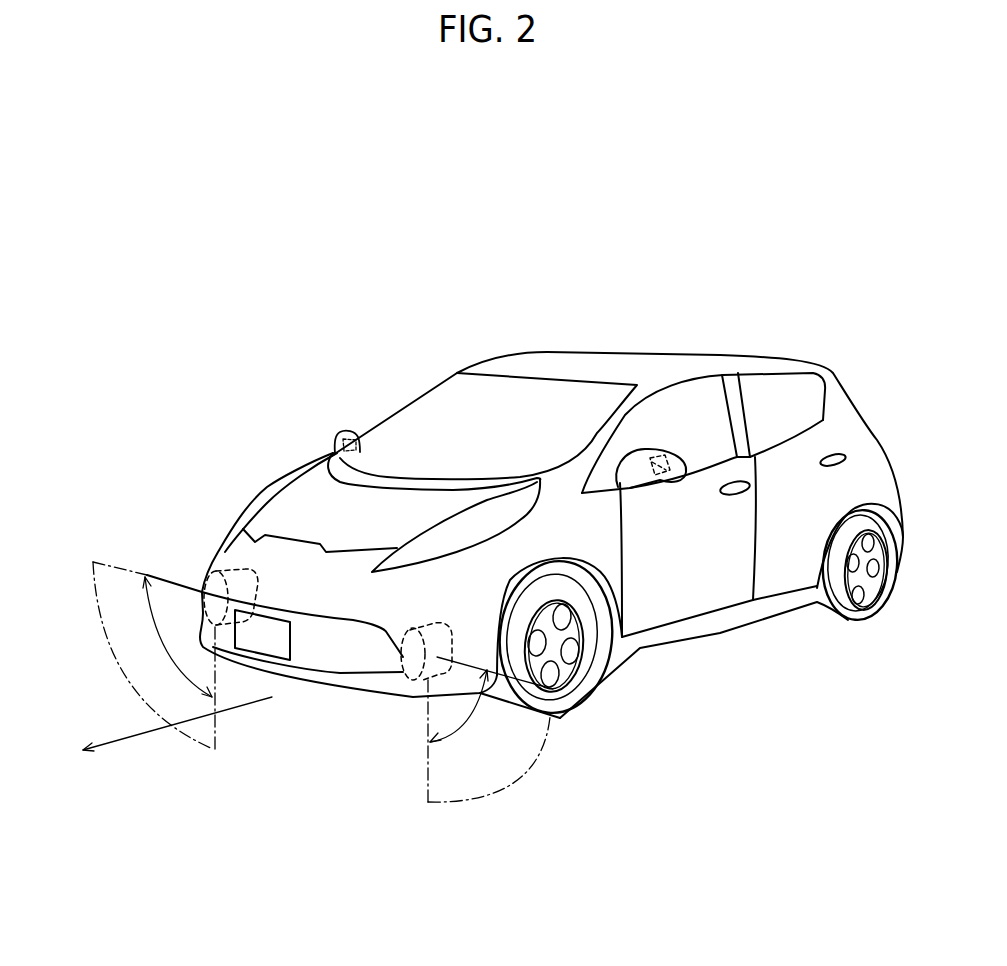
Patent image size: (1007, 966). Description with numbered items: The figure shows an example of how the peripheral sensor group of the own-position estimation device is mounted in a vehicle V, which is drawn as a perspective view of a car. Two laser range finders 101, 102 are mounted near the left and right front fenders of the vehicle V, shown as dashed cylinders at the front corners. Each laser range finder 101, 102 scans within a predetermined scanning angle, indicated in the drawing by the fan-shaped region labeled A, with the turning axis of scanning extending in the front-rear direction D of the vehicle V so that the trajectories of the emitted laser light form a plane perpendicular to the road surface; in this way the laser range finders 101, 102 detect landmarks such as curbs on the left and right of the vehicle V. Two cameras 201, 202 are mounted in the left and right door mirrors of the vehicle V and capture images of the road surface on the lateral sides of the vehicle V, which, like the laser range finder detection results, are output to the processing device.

The vehicle V is at (847, 402).
The laser range finder 101 is at (408, 681).
The laser range finder 102 is at (223, 570).
The camera 201 is at (667, 480).
The camera 202 is at (343, 428).
The detection range angle of sensor A is at (321, 682).
The front-rear direction D is at (167, 733).